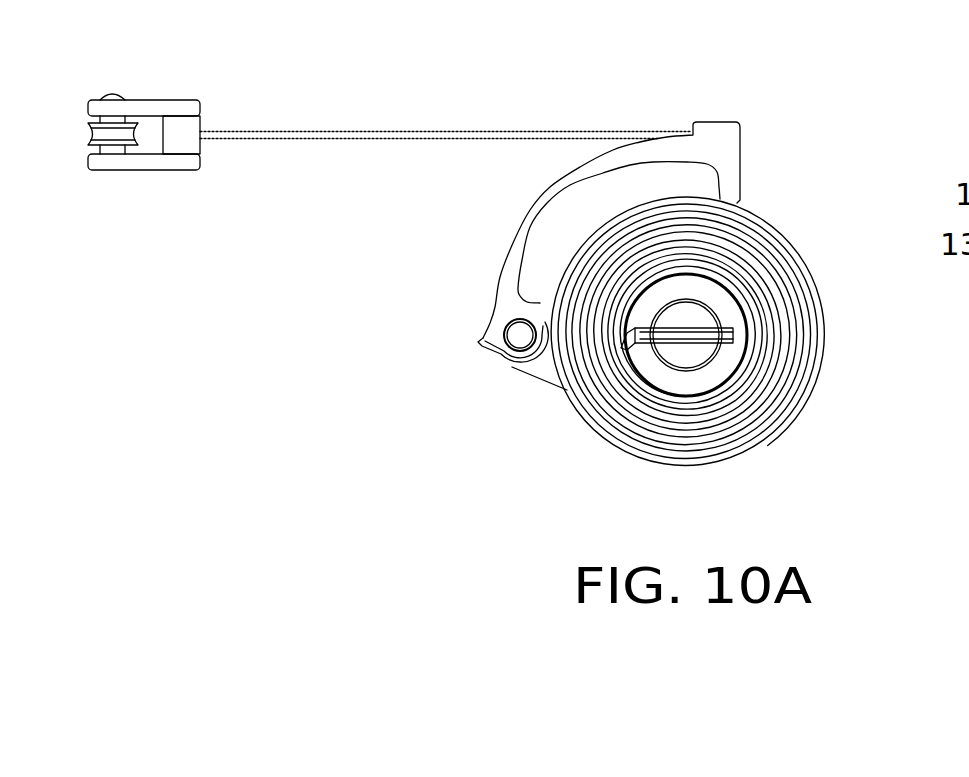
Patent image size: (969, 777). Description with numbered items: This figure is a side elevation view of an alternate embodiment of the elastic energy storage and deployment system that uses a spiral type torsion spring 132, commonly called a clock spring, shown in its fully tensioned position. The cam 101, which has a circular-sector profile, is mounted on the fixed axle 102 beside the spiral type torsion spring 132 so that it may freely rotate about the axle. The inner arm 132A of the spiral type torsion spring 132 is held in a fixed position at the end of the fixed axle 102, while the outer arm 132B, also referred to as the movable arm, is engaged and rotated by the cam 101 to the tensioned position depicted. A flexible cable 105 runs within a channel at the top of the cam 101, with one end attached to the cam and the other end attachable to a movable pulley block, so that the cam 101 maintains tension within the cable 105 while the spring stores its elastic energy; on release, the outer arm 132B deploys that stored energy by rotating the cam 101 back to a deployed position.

The cam 101 is at (745, 160).
The fixed axle 102 is at (688, 360).
The flexible cable 105 is at (432, 130).
The spiral type torsion spring 132 is at (825, 332).
The inner arm 132A is at (683, 330).
The outer arm 132B is at (482, 343).